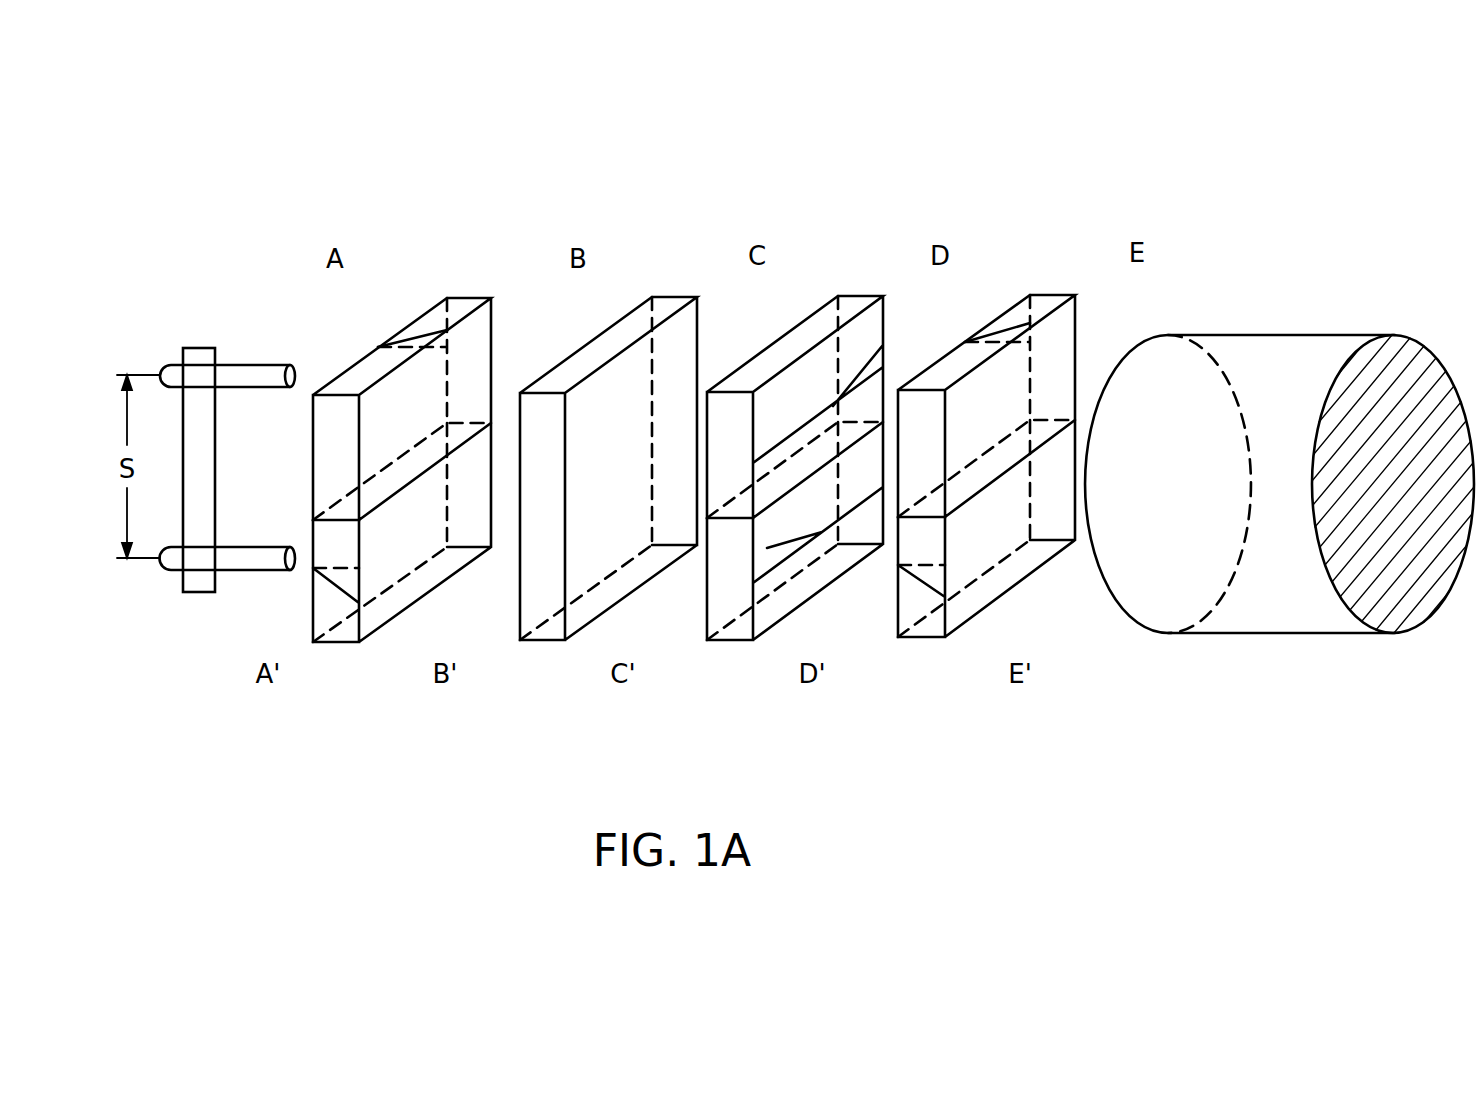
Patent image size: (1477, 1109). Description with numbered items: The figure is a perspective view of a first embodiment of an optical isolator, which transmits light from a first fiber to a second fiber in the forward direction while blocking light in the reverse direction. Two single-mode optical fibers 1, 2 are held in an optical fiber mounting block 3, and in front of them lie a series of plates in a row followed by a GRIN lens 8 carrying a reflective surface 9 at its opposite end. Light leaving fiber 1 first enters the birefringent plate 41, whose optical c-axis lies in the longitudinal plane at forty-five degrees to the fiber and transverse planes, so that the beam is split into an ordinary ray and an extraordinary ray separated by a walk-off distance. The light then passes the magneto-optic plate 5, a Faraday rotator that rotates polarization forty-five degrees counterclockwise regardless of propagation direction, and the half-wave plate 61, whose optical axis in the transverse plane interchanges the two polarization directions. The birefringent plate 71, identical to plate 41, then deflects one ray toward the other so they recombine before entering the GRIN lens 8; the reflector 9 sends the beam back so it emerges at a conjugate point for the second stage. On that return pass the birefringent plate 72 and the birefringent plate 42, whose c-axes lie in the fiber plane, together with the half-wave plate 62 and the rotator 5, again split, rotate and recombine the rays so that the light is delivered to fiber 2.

The single-mode optical fiber 1 is at (233, 362).
The single-mode optical fiber 2 is at (237, 572).
The optical fiber mounting block 3 is at (215, 478).
The birefringent plate 41 is at (455, 297).
The birefringent plate 42 is at (422, 600).
The magneto-optic plate 5 is at (655, 295).
The half-wave plate 61 is at (847, 293).
The half-wave plate 62 is at (807, 600).
The birefringent plate 71 is at (1035, 292).
The birefringent plate 72 is at (1023, 583).
The GRIN lens 8 is at (1260, 333).
The reflective surface 9 is at (1417, 342).